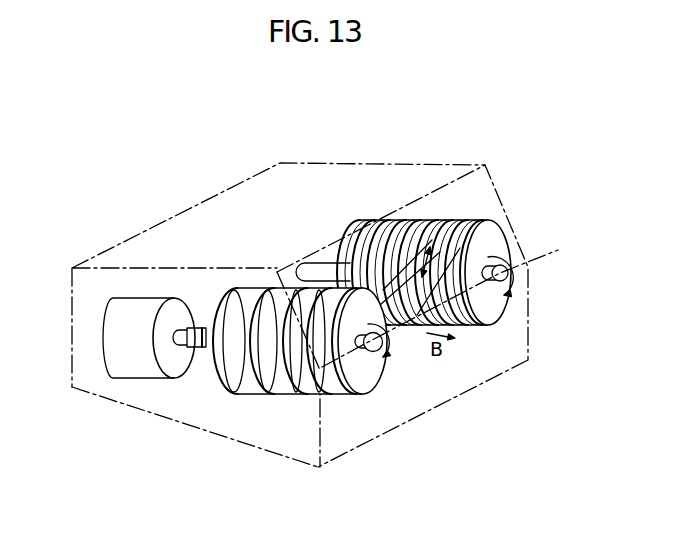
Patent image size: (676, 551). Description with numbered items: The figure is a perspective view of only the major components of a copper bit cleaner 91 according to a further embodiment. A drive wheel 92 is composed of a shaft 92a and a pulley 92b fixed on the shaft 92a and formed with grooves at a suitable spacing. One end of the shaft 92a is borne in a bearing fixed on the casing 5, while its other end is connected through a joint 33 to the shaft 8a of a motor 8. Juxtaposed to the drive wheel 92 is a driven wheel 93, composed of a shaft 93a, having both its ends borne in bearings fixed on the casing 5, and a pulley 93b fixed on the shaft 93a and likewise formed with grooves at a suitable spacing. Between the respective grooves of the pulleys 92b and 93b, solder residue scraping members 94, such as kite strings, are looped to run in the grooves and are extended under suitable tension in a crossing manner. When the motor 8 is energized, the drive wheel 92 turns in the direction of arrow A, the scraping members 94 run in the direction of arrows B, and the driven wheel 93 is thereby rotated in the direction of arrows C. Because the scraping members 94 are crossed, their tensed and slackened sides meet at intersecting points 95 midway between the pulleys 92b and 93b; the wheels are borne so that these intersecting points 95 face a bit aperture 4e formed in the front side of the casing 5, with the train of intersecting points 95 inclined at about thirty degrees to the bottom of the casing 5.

The copper bit cleaner 91 is at (187, 168).
The casing 5 is at (275, 453).
The bit aperture 4e is at (391, 222).
The motor 8 is at (103, 332).
The shaft of the motor 8a is at (178, 332).
The joint 33 is at (202, 349).
The drive wheel 92 is at (317, 416).
The shaft 92a is at (369, 358).
The pulley 92b is at (373, 382).
The driven wheel 93 is at (497, 345).
The shaft 93a is at (506, 273).
The pulley 93b is at (500, 316).
The solder residue scraping members 94 is at (467, 328).
The intersecting points 95 is at (420, 328).